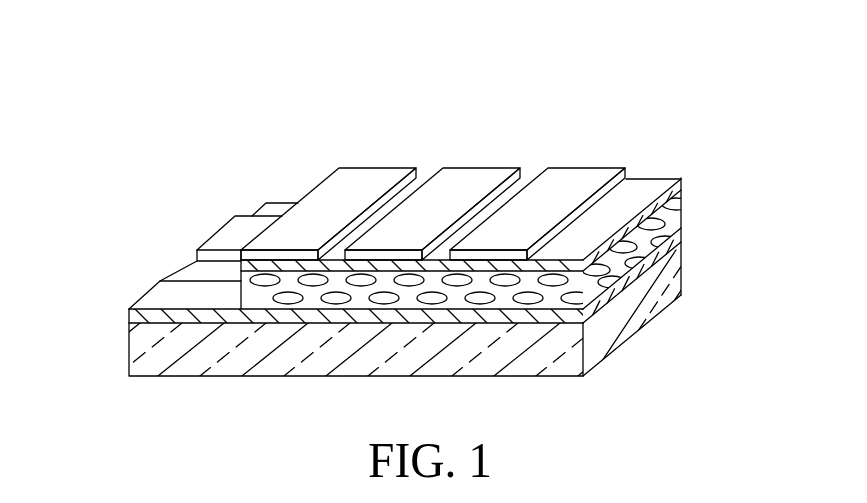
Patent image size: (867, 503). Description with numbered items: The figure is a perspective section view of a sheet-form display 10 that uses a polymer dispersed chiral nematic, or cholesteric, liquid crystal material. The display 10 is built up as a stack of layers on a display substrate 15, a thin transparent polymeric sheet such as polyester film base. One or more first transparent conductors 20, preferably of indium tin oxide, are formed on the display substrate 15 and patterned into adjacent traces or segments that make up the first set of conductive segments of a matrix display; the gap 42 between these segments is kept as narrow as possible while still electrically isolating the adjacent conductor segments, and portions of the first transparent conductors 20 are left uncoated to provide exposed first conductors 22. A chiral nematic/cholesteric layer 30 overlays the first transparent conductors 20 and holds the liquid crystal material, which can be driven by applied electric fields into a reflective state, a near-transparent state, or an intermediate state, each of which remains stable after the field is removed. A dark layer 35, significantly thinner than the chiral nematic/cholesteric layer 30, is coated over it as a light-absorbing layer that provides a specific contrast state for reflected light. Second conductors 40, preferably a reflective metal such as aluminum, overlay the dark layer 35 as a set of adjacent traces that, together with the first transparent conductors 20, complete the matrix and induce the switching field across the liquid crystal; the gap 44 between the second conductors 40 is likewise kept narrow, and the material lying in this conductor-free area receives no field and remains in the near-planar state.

The display 10 is at (241, 84).
The display substrate 15 is at (148, 347).
The first transparent conductors 20 is at (602, 296).
The exposed first conductors 22 is at (247, 228).
The chiral nematic/cholesteric layer 30 is at (678, 214).
The dark layer 35 is at (658, 184).
The second conductors 40 is at (367, 170).
The gap 42 is at (188, 263).
The gap 44 is at (433, 163).